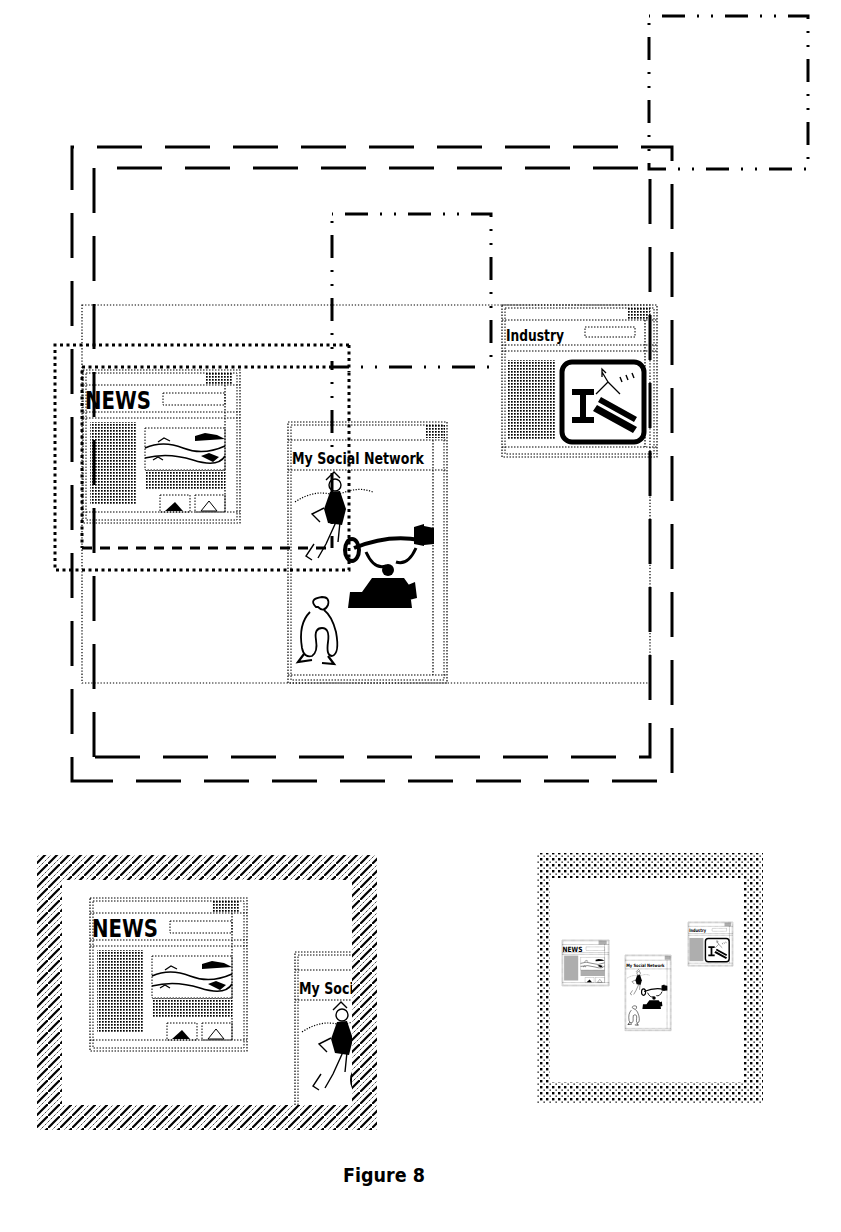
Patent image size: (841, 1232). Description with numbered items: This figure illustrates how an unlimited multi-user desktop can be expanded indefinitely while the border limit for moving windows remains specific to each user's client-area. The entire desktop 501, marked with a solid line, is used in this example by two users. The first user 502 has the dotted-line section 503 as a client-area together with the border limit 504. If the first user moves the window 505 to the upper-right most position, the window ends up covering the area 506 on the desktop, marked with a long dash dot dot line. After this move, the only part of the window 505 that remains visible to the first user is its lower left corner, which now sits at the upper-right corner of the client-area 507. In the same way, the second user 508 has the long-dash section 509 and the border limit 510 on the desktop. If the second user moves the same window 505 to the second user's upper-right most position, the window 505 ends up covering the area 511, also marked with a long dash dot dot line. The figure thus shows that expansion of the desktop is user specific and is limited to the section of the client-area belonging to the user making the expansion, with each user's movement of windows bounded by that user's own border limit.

The entire desktop 501 is at (138, 1118).
The first user 502 is at (272, 345).
The section of the first user 503 is at (302, 305).
The border limit of the first user 504 is at (227, 367).
The window 505 is at (232, 447).
The area covered by the window for the first user 506 is at (333, 283).
The upper-right corner of the client-area 507 is at (349, 356).
The second user 508 is at (628, 1088).
The section of the second user 509 is at (158, 781).
The border limit of the second user 510 is at (268, 757).
The area covered by the window for the second user 511 is at (649, 107).